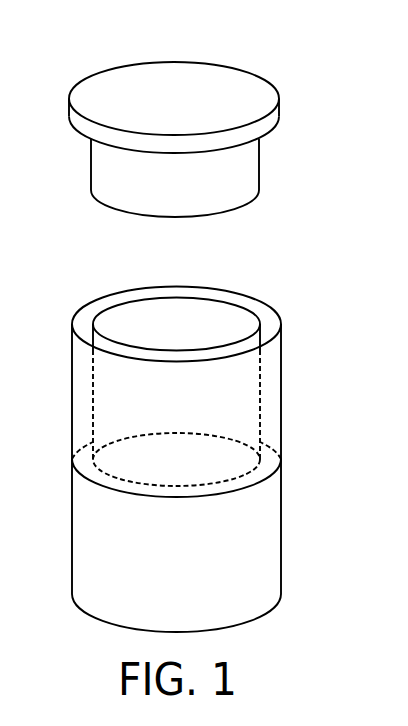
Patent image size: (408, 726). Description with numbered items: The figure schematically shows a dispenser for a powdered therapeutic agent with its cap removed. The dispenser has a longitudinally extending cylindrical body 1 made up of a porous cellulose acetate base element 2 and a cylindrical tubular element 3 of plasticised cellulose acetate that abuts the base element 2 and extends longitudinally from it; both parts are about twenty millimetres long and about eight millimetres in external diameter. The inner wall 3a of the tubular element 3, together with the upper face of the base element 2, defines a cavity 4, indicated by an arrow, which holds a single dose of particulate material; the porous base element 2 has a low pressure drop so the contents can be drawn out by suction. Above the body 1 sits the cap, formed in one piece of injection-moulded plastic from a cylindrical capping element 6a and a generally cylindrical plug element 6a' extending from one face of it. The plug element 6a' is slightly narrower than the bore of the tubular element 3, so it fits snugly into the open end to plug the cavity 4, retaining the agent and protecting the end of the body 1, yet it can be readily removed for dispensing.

The cylindrical body 1 is at (189, 440).
The cylindrical base element 2 is at (81, 552).
The cylindrical tubular element 3 is at (260, 310).
The inner wall 3a is at (118, 318).
The cavity 4 is at (191, 323).
The capping element 6a is at (174, 89).
The plug element 6a' is at (147, 178).